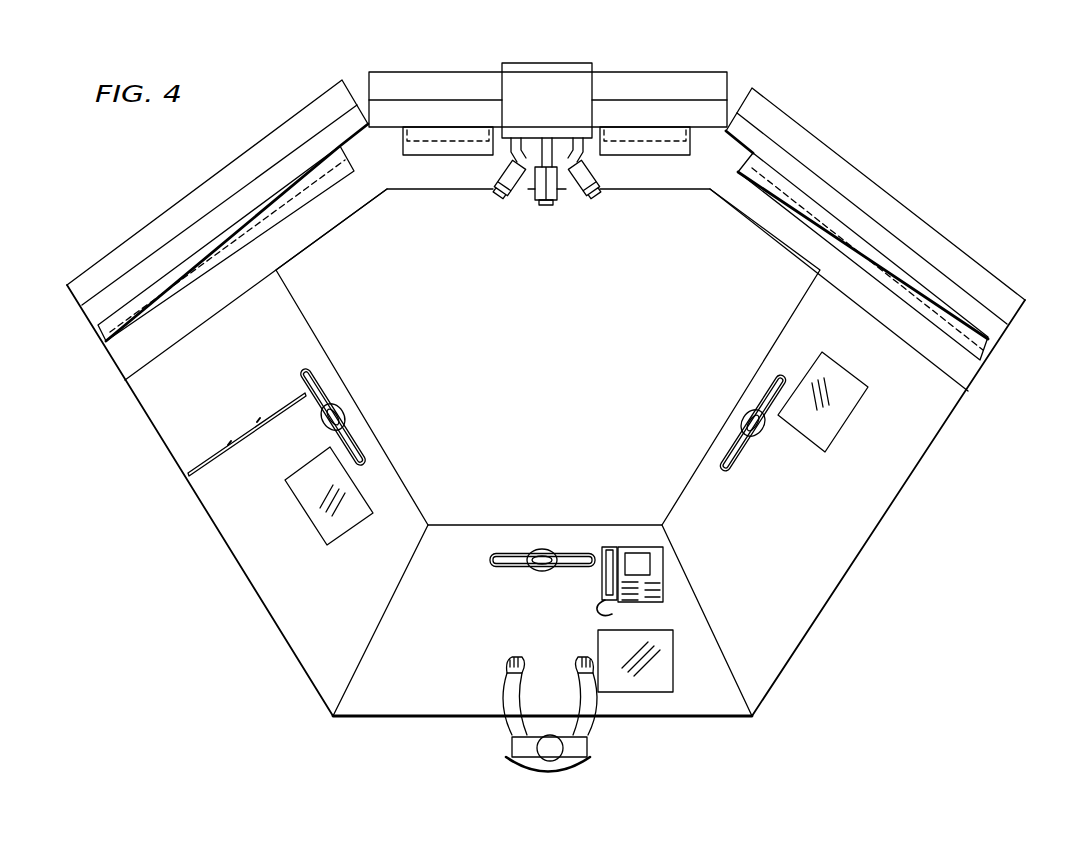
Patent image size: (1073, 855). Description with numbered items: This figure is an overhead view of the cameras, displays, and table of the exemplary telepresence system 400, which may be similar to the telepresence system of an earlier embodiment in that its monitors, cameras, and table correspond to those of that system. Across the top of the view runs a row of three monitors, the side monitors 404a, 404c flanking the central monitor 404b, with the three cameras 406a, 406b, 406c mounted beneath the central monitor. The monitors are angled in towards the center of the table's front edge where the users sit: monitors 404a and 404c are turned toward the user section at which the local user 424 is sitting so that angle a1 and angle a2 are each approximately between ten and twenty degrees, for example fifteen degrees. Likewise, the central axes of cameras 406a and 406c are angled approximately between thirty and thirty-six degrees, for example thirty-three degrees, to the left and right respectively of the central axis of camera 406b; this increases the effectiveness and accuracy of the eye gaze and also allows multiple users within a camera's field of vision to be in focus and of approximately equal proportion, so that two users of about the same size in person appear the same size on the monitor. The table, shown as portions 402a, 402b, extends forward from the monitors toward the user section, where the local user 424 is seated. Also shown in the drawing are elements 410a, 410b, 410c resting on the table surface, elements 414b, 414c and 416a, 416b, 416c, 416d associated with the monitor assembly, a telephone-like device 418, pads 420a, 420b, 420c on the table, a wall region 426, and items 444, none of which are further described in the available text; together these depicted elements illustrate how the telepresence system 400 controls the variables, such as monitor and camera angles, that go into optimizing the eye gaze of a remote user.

The telepresence system 400 is at (862, 92).
The table 402a is at (823, 544).
The table 402b is at (125, 363).
The monitor 404a is at (202, 192).
The monitor 404b is at (617, 80).
The monitor 404c is at (893, 208).
The camera 406a is at (502, 196).
The camera 406b is at (548, 205).
The camera 406c is at (594, 196).
The left microphone unit 410a is at (345, 403).
The center microphone unit 410b is at (490, 560).
The right microphone unit 410c is at (745, 405).
The center speaker 414b is at (447, 135).
The right speaker 414c is at (662, 135).
The left light strip 416a is at (128, 288).
The center-left light strip 416b is at (437, 155).
The center-right light strip 416c is at (660, 155).
The right light strip 416d is at (940, 303).
The telephone 418 is at (664, 580).
The left control pad 420a is at (305, 492).
The center control pad 420b is at (640, 680).
The right control pad 420c is at (845, 398).
The local user 424 is at (500, 740).
The left wall 426 is at (215, 377).
The table / chair elements 444 is at (275, 403).
The angle a1 is at (395, 128).
The angle a2 is at (741, 149).